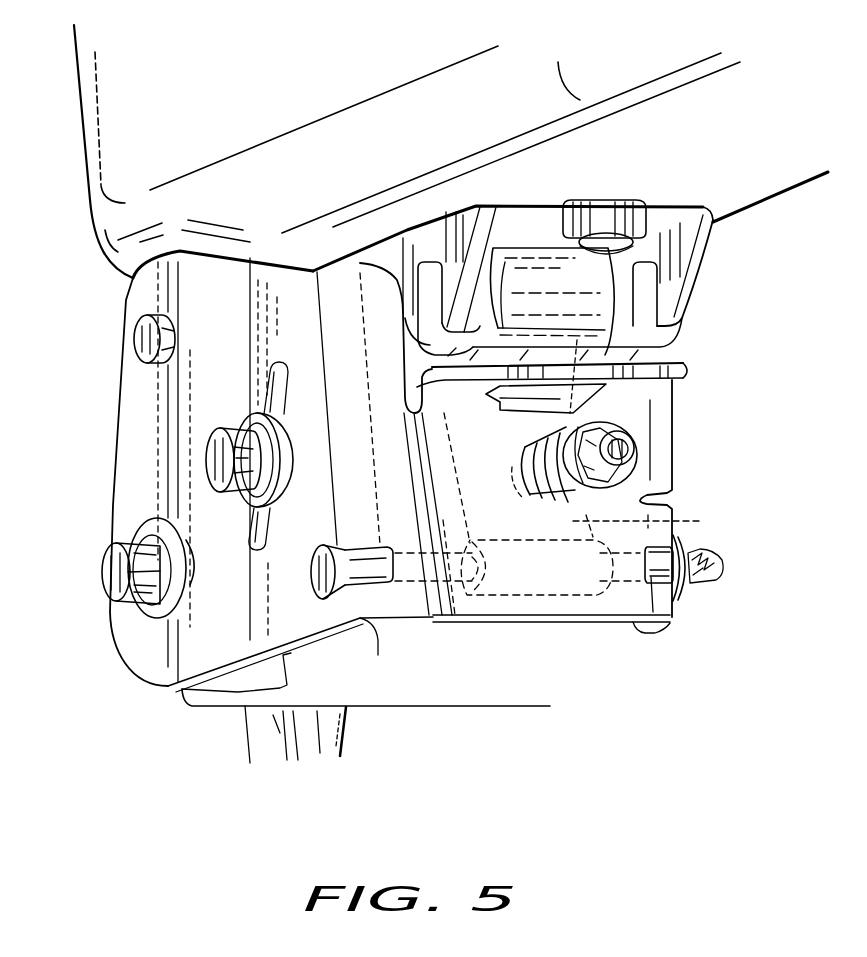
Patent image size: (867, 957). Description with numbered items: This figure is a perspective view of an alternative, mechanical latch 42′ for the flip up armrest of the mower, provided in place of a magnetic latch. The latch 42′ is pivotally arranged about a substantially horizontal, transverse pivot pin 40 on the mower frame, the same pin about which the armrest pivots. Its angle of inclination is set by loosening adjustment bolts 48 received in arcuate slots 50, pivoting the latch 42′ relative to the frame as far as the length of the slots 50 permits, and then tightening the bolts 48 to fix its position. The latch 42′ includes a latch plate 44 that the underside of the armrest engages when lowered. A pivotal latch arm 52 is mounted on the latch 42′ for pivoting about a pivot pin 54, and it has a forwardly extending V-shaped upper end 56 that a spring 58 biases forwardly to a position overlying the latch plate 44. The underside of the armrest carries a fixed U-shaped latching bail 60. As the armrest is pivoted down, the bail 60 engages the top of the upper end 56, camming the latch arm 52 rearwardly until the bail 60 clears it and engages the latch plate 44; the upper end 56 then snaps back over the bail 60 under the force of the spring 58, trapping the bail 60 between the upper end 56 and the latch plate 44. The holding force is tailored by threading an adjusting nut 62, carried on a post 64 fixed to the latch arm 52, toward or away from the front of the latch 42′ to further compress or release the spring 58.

The pivot pin 40 is at (133, 340).
The mechanical latch 42′ is at (152, 409).
The latch plate 44 is at (687, 367).
The adjustment bolts 48 is at (112, 585).
The arcuate slots 50 is at (267, 366).
The latch arm 52 is at (690, 521).
The pivot pin 54 is at (367, 570).
The V-shaped upper end 56 is at (526, 272).
The spring 58 is at (524, 441).
The U-shaped latching bail 60 is at (683, 333).
The adjusting nut 62 is at (630, 481).
The post 64 is at (617, 446).